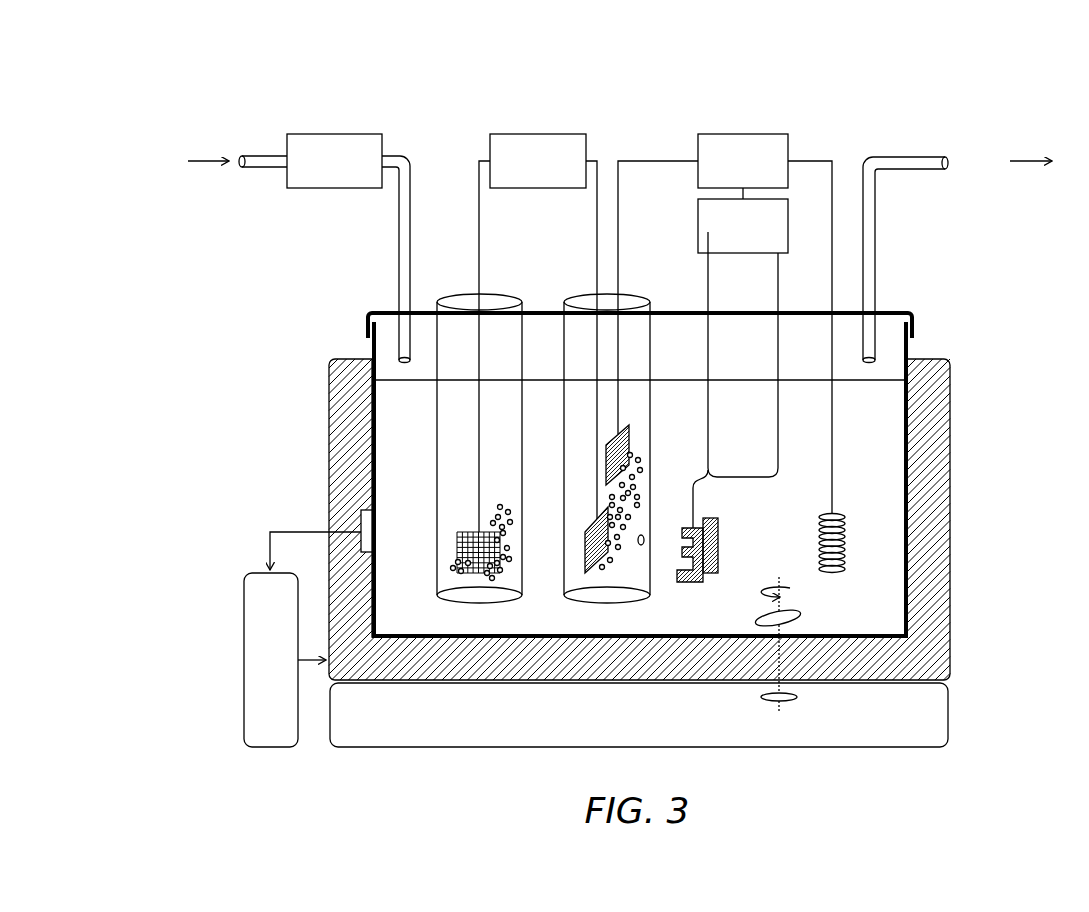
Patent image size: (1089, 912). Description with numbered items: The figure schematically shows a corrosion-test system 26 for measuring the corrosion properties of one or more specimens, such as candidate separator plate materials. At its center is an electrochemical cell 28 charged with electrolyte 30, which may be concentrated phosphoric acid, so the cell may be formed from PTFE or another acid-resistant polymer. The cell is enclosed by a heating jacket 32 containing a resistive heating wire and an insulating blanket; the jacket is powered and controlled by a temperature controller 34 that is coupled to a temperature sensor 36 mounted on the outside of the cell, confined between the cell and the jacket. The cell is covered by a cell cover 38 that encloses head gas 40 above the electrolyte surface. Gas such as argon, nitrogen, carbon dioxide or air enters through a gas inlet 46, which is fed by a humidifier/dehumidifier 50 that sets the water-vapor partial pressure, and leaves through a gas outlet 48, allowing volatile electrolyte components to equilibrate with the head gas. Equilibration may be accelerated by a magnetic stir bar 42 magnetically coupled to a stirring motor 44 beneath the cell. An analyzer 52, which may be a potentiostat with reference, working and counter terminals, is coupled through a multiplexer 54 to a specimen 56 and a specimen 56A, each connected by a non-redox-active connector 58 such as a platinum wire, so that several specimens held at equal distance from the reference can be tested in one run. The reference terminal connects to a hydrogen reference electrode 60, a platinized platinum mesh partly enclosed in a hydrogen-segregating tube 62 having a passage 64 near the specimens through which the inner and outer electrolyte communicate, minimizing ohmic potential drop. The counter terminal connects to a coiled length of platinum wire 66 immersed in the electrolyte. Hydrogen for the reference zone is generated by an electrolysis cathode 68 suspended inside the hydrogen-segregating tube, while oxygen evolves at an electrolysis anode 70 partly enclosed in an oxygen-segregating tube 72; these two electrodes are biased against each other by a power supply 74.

The corrosion-test system 26 is at (385, 77).
The electrochemical cell 28 is at (640, 496).
The electrolyte 30 is at (873, 453).
The heating jacket 32 is at (951, 625).
The temperature controller 34 is at (285, 660).
The temperature sensor 36 is at (376, 520).
The cell cover 38 is at (895, 310).
The head gas 40 is at (768, 323).
The magnetic stir bar 42 is at (758, 629).
The stirring motor 44 is at (639, 715).
The gas inlet 46 is at (398, 198).
The gas outlet 48 is at (877, 198).
The humidifier/dehumidifier 50 is at (261, 161).
The analyzer 52 is at (742, 133).
The multiplexer 54 is at (743, 332).
The specimen 56 is at (716, 576).
The specimen 56A is at (687, 584).
The connector 58 is at (710, 408).
The hydrogen reference electrode 60 is at (640, 446).
The hydrogen-segregating tube 62 is at (651, 367).
The passage 64 is at (652, 541).
The coiled length of platinum wire 66 is at (860, 537).
The electrolysis cathode 68 is at (578, 545).
The electrolysis anode 70 is at (448, 548).
The oxygen-segregating tube 72 is at (523, 367).
The power supply 74 is at (538, 333).